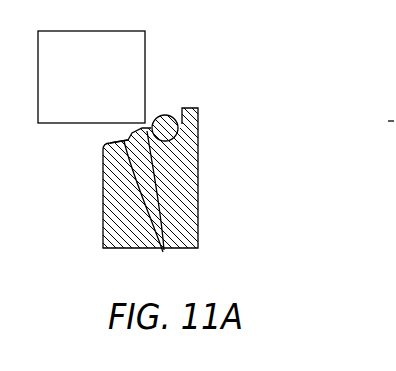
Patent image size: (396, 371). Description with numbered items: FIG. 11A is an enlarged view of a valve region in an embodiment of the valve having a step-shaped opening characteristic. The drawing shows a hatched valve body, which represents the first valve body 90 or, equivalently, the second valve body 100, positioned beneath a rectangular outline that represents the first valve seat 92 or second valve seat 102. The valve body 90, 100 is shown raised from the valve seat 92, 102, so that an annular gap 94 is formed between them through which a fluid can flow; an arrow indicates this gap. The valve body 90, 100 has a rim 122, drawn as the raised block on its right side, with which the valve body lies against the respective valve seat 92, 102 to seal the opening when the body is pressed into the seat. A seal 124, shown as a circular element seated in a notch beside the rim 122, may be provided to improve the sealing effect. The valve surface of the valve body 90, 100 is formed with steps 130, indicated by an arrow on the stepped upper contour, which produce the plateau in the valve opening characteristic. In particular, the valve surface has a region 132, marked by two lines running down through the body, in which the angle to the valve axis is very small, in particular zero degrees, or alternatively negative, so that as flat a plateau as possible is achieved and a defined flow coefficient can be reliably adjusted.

The first valve body 90 is at (186, 224).
The second valve body 100 is at (176, 185).
The first valve seat 92 is at (137, 88).
The second valve seat 102 is at (91, 77).
The annular gap 94 is at (156, 106).
The rim 122 is at (184, 136).
The seal 124 is at (172, 118).
The steps 130 is at (110, 136).
The region 132 is at (162, 248).